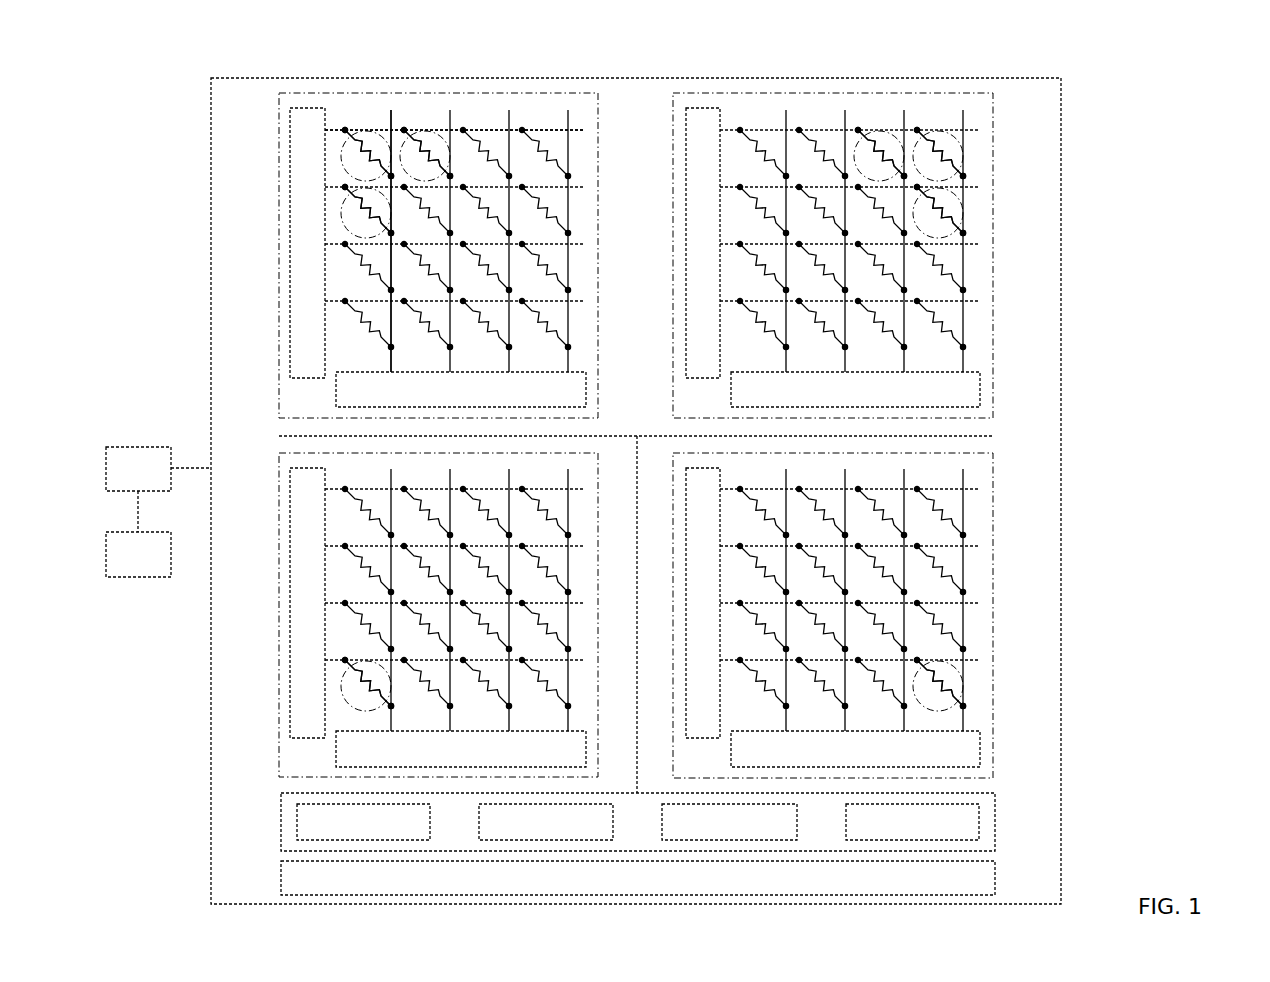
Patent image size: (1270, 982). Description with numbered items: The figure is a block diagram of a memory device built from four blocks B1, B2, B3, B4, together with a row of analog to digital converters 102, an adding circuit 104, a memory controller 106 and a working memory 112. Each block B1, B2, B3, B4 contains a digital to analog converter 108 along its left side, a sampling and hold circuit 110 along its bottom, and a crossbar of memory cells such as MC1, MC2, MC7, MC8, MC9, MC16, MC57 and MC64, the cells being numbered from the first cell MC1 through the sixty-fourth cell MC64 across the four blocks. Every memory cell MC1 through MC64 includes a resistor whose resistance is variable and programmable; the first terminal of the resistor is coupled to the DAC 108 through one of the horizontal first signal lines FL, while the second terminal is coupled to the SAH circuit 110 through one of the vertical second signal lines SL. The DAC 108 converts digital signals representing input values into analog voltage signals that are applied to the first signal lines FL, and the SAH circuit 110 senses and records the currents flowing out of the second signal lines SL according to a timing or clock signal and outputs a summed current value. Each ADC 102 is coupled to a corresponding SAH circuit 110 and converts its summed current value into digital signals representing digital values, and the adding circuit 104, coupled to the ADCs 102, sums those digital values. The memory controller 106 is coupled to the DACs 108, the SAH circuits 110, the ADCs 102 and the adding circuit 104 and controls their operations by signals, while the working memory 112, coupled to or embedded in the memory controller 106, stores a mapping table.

The analog to digital converter 102 is at (957, 834).
The adding circuit 104 is at (618, 890).
The memory controller 106 is at (122, 481).
The digital to analog converter 108 is at (686, 508).
The sampling and hold circuit 110 is at (899, 759).
The working memory 112 is at (122, 569).
The first signal line FL is at (343, 128).
The second signal line SL is at (392, 120).
The memory cell MC1 is at (365, 131).
The memory cell MC2 is at (426, 132).
The memory cell MC7 is at (884, 132).
The memory cell MC8 is at (963, 153).
The memory cell MC9 is at (343, 196).
The memory cell MC16 is at (963, 196).
The memory cell MC57 is at (341, 686).
The memory cell MC64 is at (963, 676).
The block B1 is at (277, 403).
The block B2 is at (995, 403).
The block B3 is at (995, 762).
The block B4 is at (277, 762).